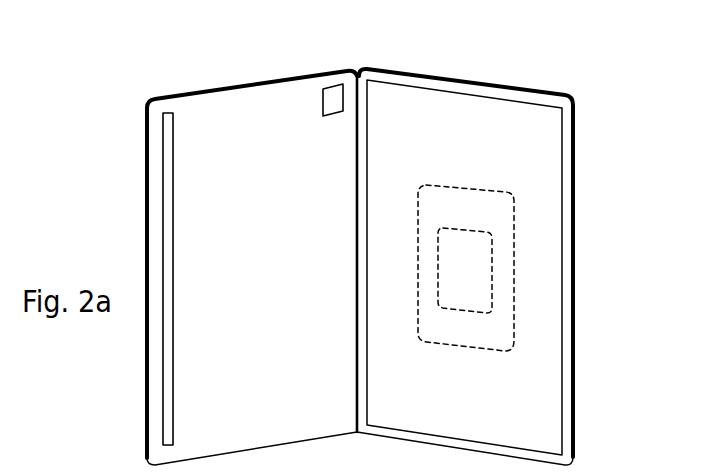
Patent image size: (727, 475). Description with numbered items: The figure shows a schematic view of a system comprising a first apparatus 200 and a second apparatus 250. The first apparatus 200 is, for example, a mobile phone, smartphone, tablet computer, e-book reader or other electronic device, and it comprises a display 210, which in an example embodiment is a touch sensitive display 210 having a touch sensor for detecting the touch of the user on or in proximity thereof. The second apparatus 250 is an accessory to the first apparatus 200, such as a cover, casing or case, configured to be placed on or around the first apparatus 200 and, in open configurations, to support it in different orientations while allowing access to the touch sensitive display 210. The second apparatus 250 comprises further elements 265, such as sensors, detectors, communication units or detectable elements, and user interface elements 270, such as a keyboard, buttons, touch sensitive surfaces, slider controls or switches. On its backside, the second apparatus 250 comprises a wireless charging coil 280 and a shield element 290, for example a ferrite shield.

The first apparatus 200 is at (658, 126).
The display 210 is at (470, 241).
The second apparatus 250 is at (82, 182).
The further elements 265 is at (299, 137).
The user interface elements 270 is at (123, 279).
The wireless charging coil 280 is at (432, 311).
The shield element 290 is at (468, 243).